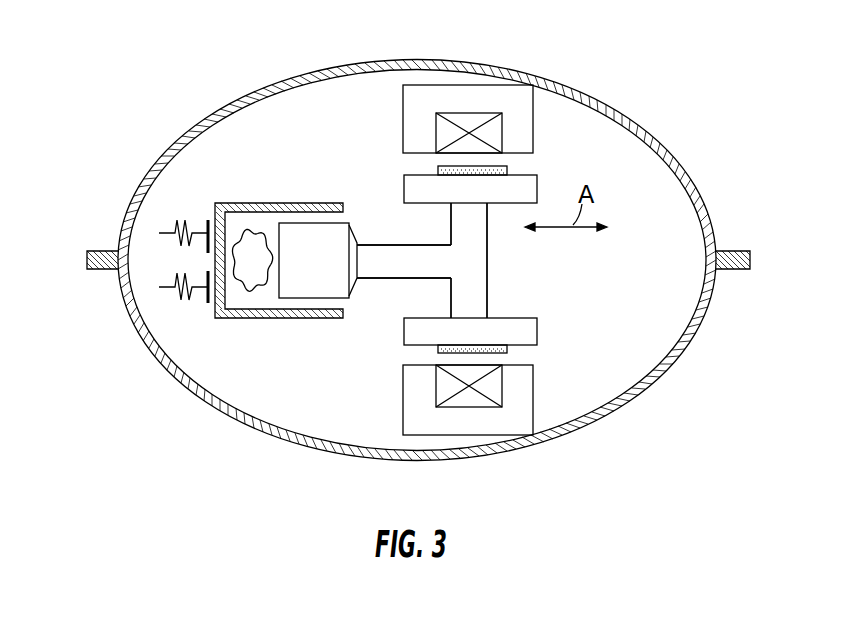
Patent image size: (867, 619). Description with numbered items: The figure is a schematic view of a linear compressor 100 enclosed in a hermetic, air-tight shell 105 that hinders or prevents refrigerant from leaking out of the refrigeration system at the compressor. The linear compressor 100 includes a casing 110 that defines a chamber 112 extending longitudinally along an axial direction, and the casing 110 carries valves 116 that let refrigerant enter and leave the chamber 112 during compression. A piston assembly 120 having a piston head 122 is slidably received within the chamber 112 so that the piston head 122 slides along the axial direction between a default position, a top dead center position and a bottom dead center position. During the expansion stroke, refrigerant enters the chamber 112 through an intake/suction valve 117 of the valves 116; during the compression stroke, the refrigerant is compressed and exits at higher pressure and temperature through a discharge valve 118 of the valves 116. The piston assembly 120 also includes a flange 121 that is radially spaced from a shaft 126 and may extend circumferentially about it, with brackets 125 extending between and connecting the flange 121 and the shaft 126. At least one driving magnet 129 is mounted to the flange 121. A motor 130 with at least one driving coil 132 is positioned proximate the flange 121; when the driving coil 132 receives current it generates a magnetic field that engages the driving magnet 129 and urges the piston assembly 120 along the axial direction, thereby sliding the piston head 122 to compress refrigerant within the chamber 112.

The linear compressor 100 is at (418, 247).
The hermetic shell 105 is at (628, 115).
The casing 110 is at (298, 204).
The chamber 112 is at (247, 287).
The valves 116 is at (200, 245).
The intake/suction valve 117 is at (169, 229).
The discharge valve 118 is at (168, 290).
The piston assembly 120 is at (372, 279).
The flange 121 is at (537, 190).
The piston head 122 is at (330, 287).
The brackets 125 is at (463, 225).
The shaft 126 is at (478, 262).
The driving magnet 129 is at (437, 171).
The motor 130 is at (420, 78).
The driving coil 132 is at (468, 120).